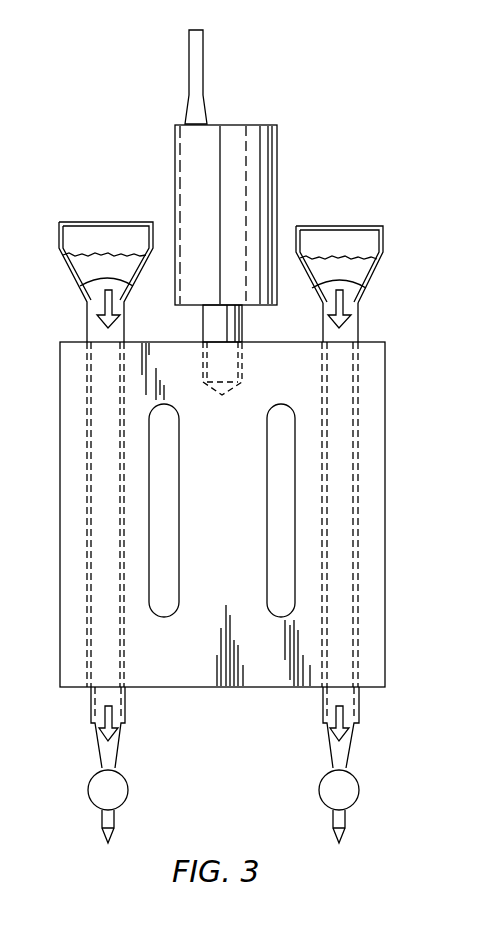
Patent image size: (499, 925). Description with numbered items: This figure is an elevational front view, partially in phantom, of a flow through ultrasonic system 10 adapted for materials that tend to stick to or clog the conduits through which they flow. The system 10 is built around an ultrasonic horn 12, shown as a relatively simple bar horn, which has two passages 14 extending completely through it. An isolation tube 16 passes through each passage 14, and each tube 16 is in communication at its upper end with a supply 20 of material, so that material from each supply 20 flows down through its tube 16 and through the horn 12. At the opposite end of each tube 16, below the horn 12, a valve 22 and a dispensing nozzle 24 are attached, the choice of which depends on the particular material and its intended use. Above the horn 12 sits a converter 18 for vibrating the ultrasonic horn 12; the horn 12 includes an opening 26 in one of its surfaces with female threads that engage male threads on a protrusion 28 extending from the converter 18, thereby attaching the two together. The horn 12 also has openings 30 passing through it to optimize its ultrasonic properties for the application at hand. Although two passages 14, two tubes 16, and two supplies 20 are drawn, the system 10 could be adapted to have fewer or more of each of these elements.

The flow through ultrasonic system 10 is at (444, 378).
The ultrasonic horn 12 is at (255, 676).
The passage 14 is at (352, 531).
The isolation tube 16 is at (352, 331).
The converter 18 is at (246, 190).
The supply of material 20 is at (357, 266).
The valve 22 is at (358, 778).
The dispensing nozzle 24 is at (348, 834).
The opening 26 is at (243, 366).
The protrusion 28 is at (245, 356).
The opening 30 is at (160, 577).